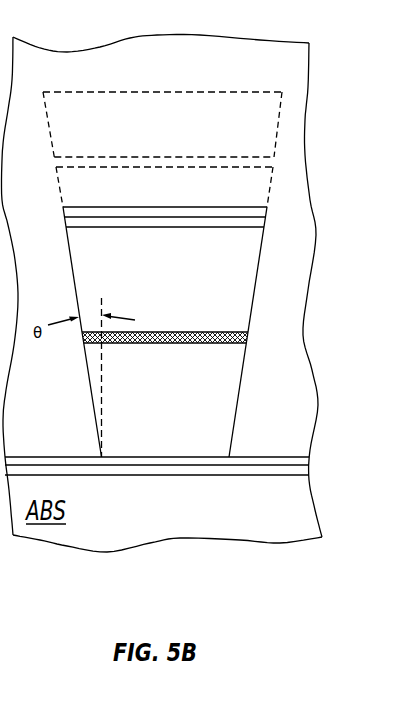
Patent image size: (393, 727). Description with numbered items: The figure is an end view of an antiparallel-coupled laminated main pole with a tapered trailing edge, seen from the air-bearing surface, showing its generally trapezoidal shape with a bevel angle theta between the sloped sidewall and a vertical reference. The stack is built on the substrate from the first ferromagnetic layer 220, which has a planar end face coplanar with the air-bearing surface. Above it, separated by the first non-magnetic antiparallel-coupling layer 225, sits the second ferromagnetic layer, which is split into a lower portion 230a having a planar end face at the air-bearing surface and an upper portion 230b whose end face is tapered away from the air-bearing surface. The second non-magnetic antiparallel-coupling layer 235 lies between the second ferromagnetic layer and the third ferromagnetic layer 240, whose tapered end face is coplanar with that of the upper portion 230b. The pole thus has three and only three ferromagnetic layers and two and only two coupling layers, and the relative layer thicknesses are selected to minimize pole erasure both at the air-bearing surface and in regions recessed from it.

The first ferromagnetic layer (FM1) 220 is at (230, 402).
The first non-magnetic antiparallel-coupling layer (APC1) 225 is at (243, 337).
The lower portion of second ferromagnetic layer (FM2) 230a is at (247, 280).
The upper portion of second ferromagnetic layer (FM2) 230b is at (268, 185).
The second non-magnetic antiparallel-coupling layer (APC2) 235 is at (265, 163).
The third ferromagnetic layer (FM3) 240 is at (272, 127).